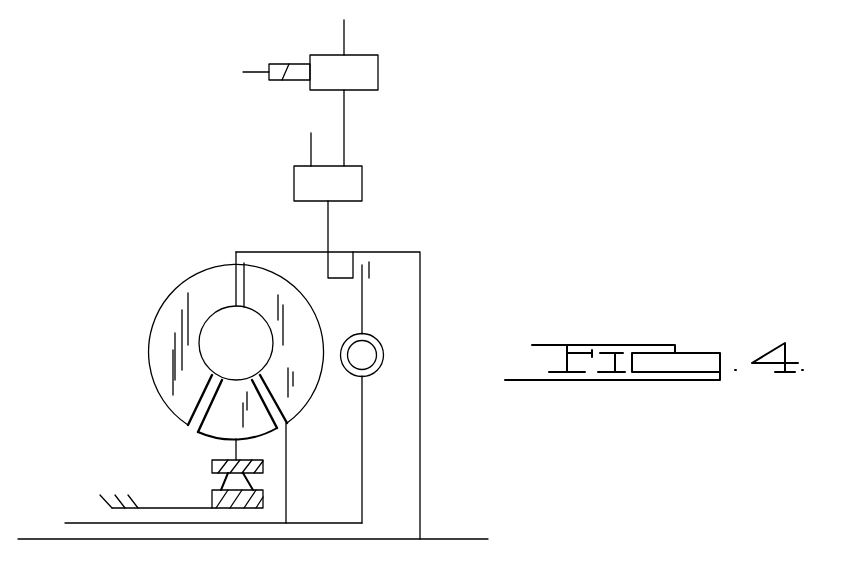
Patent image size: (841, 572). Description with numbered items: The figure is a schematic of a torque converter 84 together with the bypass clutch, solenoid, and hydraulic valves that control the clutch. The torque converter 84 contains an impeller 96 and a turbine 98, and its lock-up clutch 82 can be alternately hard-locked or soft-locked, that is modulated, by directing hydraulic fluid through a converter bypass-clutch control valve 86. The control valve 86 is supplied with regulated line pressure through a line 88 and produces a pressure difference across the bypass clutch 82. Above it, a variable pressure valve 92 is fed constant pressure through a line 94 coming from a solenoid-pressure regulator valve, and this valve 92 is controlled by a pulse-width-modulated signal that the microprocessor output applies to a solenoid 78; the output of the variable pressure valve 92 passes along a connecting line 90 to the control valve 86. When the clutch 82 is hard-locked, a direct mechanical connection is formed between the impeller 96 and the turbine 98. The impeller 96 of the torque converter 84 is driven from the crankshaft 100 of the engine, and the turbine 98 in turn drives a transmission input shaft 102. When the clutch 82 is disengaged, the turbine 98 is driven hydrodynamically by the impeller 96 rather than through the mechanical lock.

The solenoid 78 is at (278, 64).
The lock-up clutch 82 is at (369, 270).
The torque converter 84 is at (214, 370).
The converter bypass-clutch control valve 86 is at (362, 180).
The line 88 is at (311, 143).
The connecting line 90 is at (345, 112).
The variable pressure valve 92 is at (372, 58).
The line 94 is at (343, 40).
The impeller 96 is at (170, 392).
The turbine 98 is at (297, 405).
The crankshaft 100 is at (455, 539).
The transmission input shaft 102 is at (65, 523).